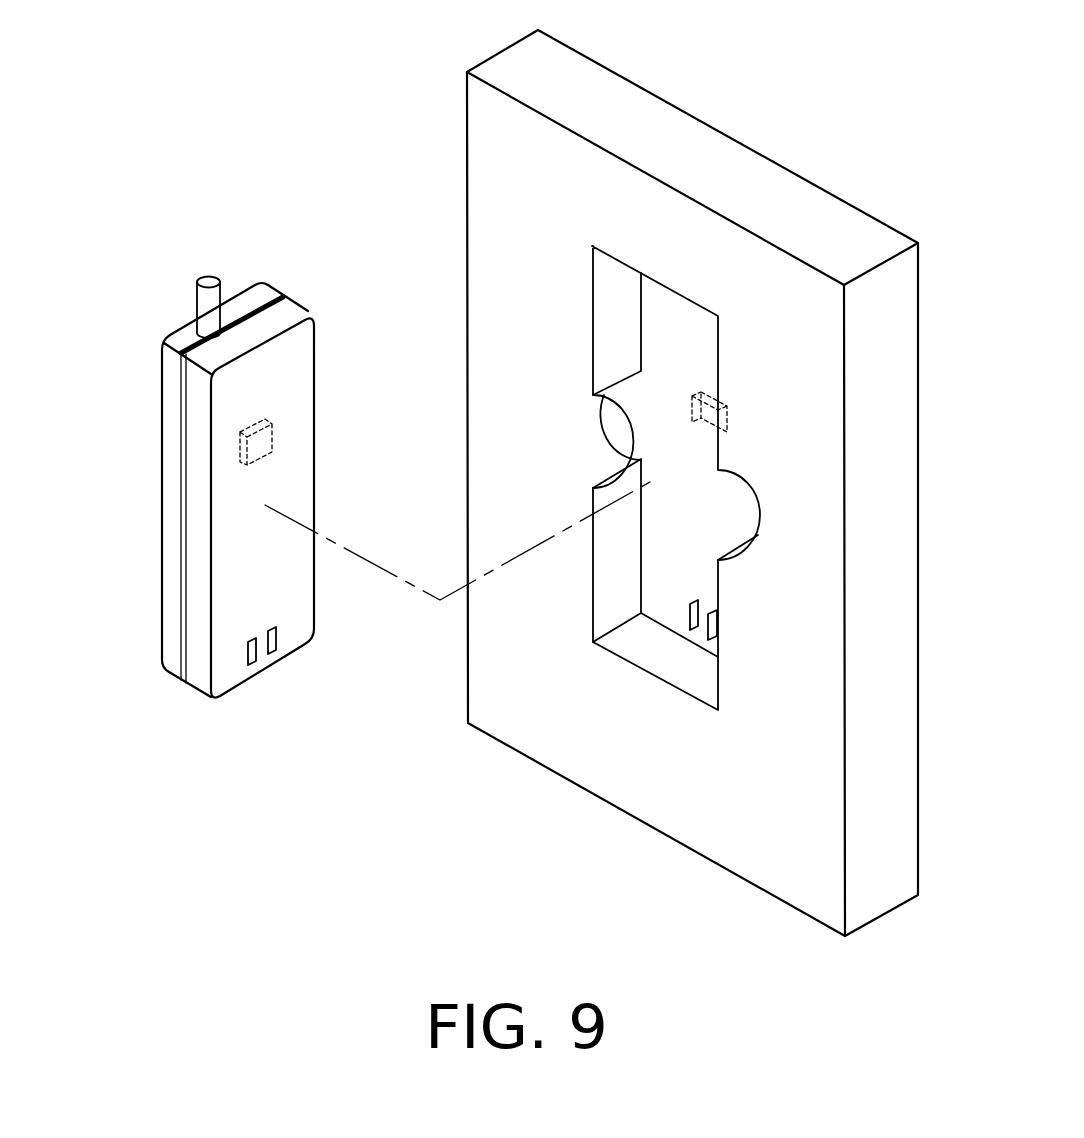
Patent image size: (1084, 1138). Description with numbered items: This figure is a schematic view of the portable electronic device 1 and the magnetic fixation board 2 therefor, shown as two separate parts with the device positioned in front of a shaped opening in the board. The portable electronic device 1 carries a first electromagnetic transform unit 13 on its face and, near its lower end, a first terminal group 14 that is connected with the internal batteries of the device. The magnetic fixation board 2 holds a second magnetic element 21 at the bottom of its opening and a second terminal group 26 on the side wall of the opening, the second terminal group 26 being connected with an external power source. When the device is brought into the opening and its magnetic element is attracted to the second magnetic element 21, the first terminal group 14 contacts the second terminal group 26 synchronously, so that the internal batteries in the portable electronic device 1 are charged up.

The portable electronic device 1 is at (150, 470).
The magnetic fixation board 2 is at (714, 128).
The first electromagnetic transform unit 13 is at (263, 442).
The first terminal group 14 is at (254, 660).
The second magnetic element 21 is at (688, 618).
The second terminal group 26 is at (697, 412).